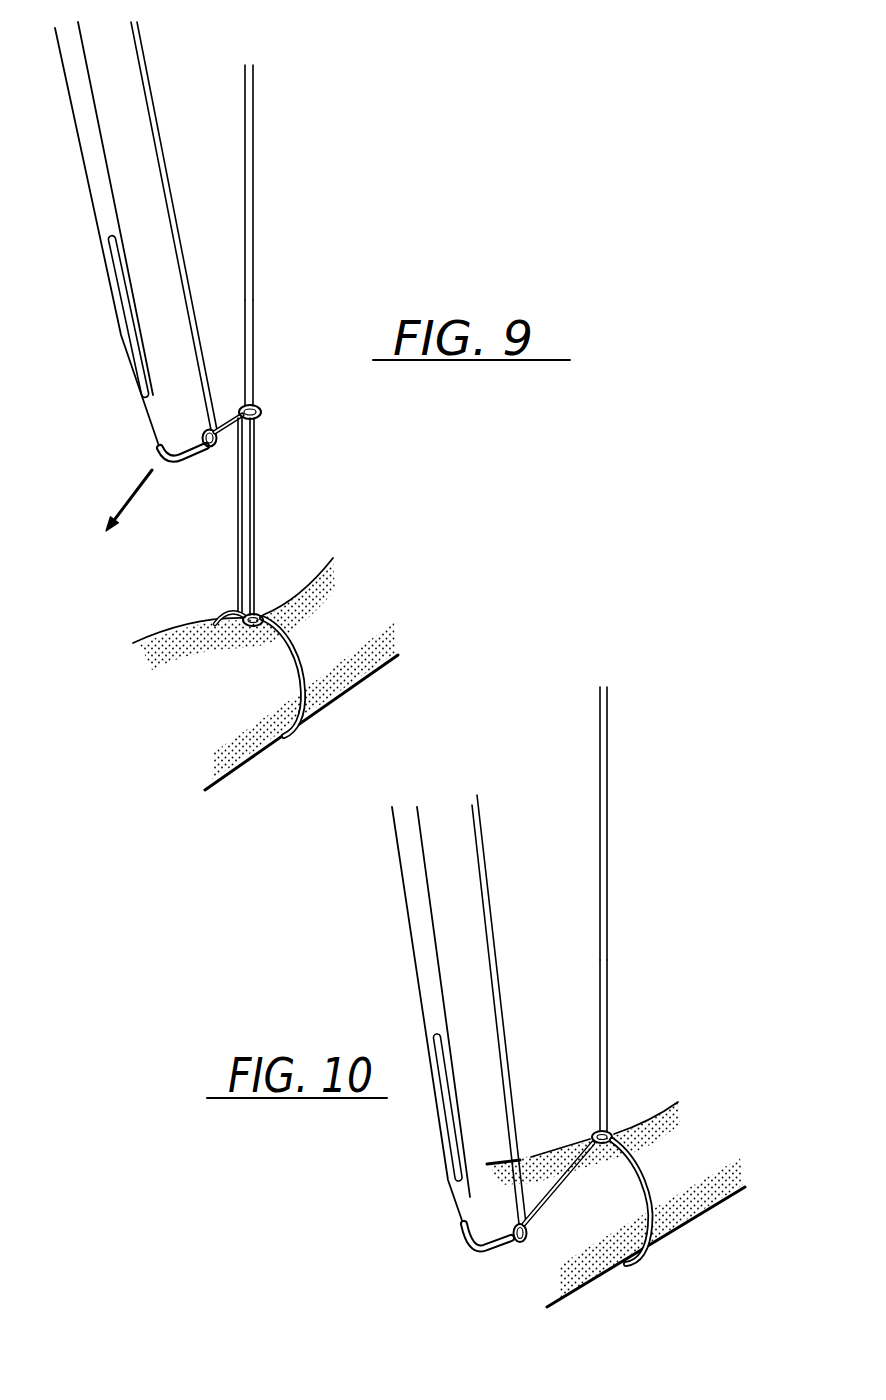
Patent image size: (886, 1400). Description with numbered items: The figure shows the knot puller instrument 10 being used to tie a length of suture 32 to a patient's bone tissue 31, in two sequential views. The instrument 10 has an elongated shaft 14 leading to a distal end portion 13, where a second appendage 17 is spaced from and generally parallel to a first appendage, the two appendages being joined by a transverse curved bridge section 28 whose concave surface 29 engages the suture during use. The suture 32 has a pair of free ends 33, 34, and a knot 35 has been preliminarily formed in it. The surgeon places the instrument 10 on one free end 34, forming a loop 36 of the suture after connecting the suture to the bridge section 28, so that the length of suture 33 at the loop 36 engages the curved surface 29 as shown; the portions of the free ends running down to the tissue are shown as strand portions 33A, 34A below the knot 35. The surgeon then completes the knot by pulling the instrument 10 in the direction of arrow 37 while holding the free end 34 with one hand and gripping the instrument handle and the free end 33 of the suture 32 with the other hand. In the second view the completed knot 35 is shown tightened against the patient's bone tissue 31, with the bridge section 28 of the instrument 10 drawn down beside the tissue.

In FIG. 9, the knot puller instrument 10 is at (72, 237).
In FIG. 10, the knot puller instrument 10 is at (386, 1155).
In FIG. 10, the distal end portion 13 is at (463, 1203).
In FIG. 10, the elongated shaft 14 is at (416, 886).
In FIG. 9, the second appendage 17 is at (170, 454).
In FIG. 9, the bridge section 28 is at (199, 448).
In FIG. 10, the bridge section 28 is at (517, 1240).
In FIG. 9, the concave surface 29 is at (185, 432).
In FIG. 9, the bone tissue 31 is at (245, 763).
In FIG. 10, the bone tissue 31 is at (697, 1213).
In FIG. 9, the suture 32 is at (254, 363).
In FIG. 10, the suture 32 is at (611, 995).
In FIG. 9, the free end 33 is at (145, 62).
In FIG. 10, the free end 33 is at (489, 889).
In FIG. 9, the first suture strand portion 33A is at (237, 552).
In FIG. 9, the free end 34 is at (253, 92).
In FIG. 10, the free end 34 is at (612, 790).
In FIG. 9, the second suture strand portion 34A is at (257, 522).
In FIG. 9, the knot 35 is at (261, 414).
In FIG. 10, the knot 35 is at (610, 1128).
In FIG. 9, the loop 36 is at (222, 410).
In FIG. 9, the arrow 37 is at (137, 490).